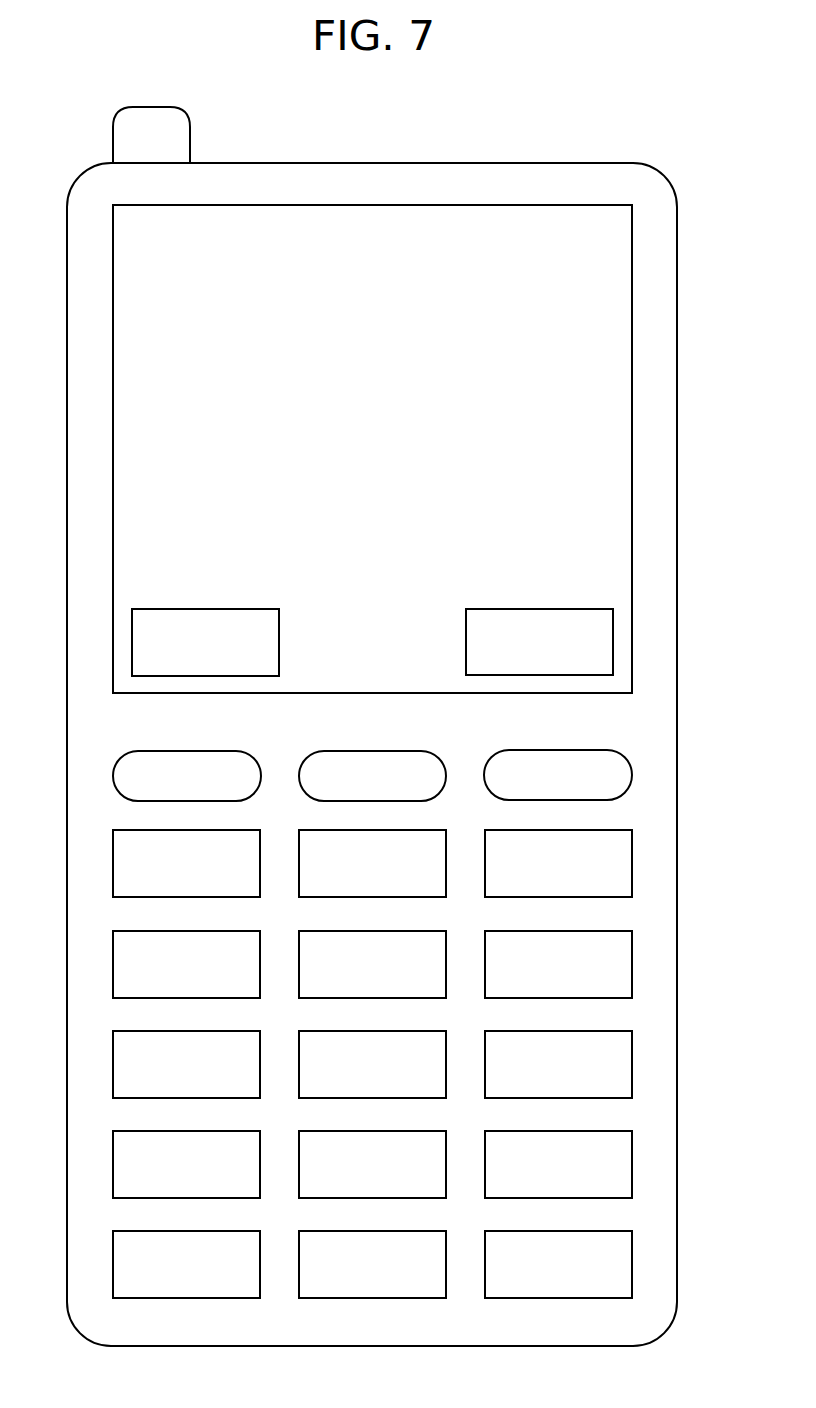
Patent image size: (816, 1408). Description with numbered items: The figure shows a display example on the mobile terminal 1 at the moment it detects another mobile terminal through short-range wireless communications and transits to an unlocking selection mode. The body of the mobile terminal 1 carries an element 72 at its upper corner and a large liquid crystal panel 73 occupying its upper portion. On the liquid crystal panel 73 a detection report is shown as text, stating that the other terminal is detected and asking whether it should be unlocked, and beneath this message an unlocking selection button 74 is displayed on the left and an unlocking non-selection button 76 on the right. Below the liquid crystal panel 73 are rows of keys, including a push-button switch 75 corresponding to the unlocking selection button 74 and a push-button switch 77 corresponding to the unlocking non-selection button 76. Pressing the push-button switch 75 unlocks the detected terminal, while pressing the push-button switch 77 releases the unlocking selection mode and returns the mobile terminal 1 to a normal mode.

The mobile terminal 1 is at (372, 163).
The antenna 72 is at (157, 107).
The liquid crystal panel 73 is at (632, 316).
The unlocking selection button 74 is at (205, 609).
The push-button switch 75 is at (187, 751).
The unlocking non-selection button 76 is at (541, 609).
The push-button switch 77 is at (560, 750).